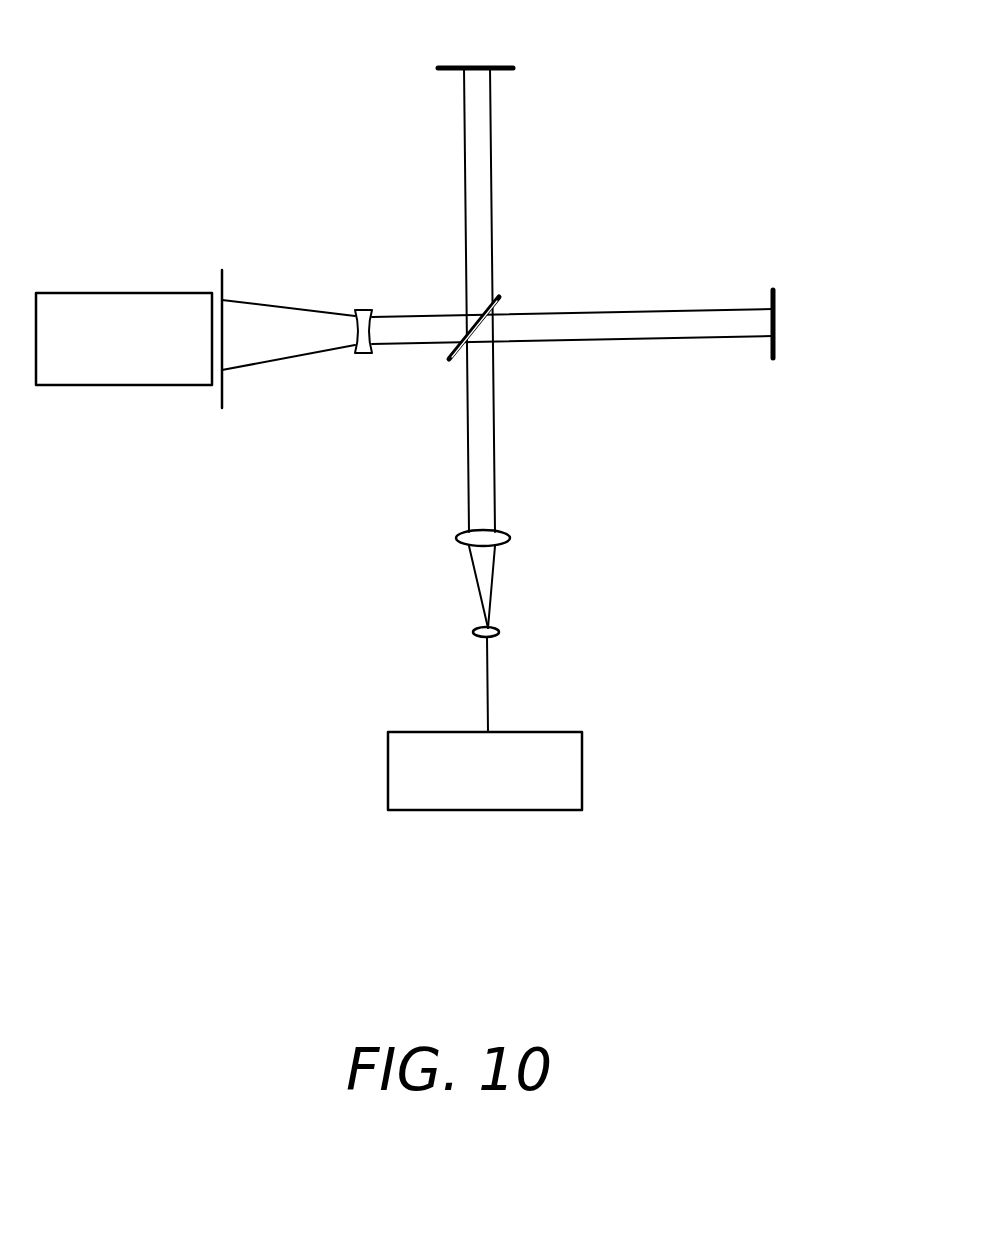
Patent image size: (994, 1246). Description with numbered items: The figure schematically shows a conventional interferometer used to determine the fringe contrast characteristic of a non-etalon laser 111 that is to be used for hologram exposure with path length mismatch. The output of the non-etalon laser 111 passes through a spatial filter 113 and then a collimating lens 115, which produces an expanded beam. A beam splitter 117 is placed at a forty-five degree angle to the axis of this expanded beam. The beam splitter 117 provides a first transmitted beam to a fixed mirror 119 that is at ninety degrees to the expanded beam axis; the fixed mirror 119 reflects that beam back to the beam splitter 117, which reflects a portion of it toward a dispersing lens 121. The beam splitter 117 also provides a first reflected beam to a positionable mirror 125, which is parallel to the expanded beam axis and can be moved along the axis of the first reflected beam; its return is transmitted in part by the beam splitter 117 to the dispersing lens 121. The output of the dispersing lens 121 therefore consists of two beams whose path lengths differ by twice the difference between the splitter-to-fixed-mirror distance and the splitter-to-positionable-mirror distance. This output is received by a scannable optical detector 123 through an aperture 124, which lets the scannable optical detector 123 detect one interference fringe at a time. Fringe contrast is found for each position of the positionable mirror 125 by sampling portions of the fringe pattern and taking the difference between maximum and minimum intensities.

The non-etalon laser 111 is at (410, 732).
The spatial filter 113 is at (497, 634).
The collimating lens 115 is at (503, 541).
The beam splitter 117 is at (503, 298).
The fixed mirror 119 is at (500, 63).
The dispersing lens 121 is at (362, 355).
The scannable optical detector 123 is at (130, 385).
The aperture 124 is at (222, 288).
The positionable mirror 125 is at (777, 298).